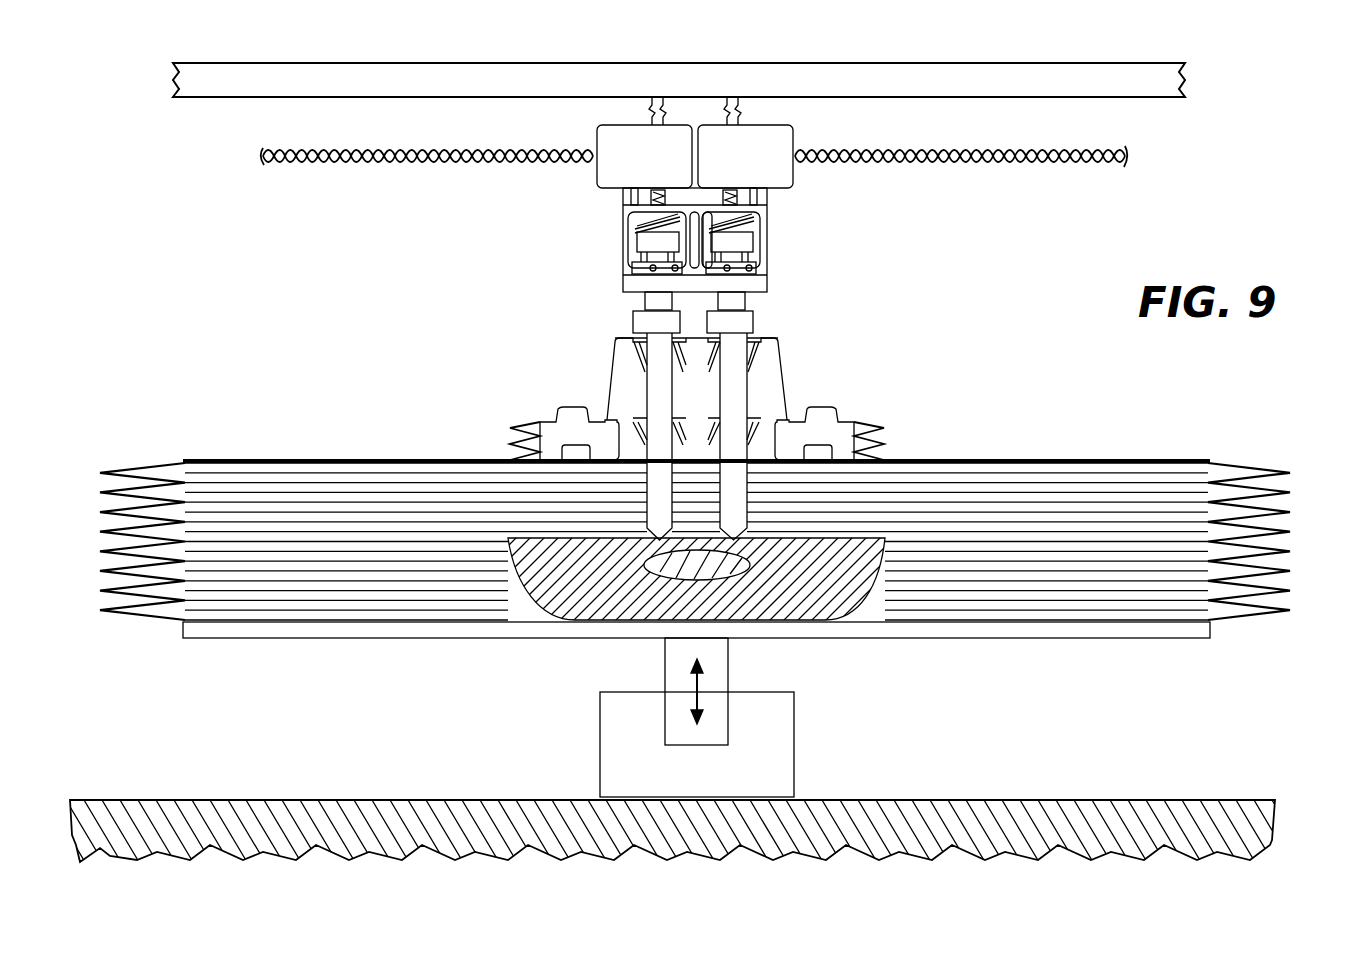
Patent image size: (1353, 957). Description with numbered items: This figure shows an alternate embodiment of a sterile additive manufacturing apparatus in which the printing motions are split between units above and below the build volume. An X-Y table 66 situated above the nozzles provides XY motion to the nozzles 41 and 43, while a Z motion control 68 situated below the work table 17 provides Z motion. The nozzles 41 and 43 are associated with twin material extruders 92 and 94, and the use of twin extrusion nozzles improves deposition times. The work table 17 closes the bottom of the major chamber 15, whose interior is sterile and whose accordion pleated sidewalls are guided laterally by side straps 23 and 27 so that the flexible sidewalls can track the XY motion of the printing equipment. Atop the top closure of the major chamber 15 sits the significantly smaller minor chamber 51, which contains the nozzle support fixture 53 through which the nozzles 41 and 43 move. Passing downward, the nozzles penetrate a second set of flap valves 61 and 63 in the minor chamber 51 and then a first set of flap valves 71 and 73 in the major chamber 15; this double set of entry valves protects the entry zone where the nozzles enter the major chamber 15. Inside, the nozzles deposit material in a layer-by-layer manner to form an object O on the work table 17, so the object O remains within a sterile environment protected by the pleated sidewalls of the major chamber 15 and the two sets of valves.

The X-Y table 66 is at (1025, 80).
The material extruder 94 is at (597, 180).
The material extruder 92 is at (793, 180).
The flap valve 63 is at (633, 328).
The flap valve 61 is at (754, 328).
The nozzle support fixture 53 is at (786, 360).
The nozzle 43 is at (657, 396).
The nozzle 41 is at (733, 396).
The flap valve 73 is at (635, 438).
The flap valve 71 is at (760, 438).
The minor chamber 51 is at (882, 440).
The side strap 27 is at (102, 532).
The side strap 23 is at (1290, 530).
The major chamber 15 is at (1295, 548).
The work table 17 is at (1148, 630).
The object O is at (810, 600).
The Z motion control 68 is at (744, 705).